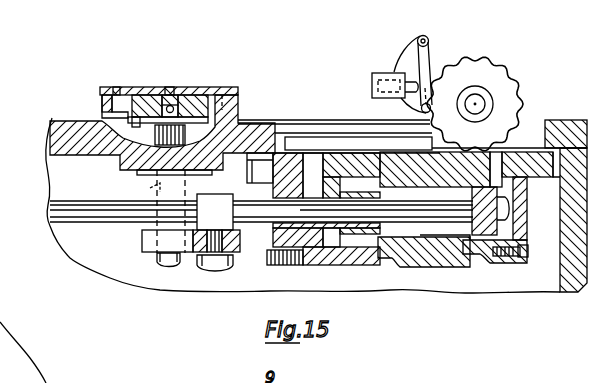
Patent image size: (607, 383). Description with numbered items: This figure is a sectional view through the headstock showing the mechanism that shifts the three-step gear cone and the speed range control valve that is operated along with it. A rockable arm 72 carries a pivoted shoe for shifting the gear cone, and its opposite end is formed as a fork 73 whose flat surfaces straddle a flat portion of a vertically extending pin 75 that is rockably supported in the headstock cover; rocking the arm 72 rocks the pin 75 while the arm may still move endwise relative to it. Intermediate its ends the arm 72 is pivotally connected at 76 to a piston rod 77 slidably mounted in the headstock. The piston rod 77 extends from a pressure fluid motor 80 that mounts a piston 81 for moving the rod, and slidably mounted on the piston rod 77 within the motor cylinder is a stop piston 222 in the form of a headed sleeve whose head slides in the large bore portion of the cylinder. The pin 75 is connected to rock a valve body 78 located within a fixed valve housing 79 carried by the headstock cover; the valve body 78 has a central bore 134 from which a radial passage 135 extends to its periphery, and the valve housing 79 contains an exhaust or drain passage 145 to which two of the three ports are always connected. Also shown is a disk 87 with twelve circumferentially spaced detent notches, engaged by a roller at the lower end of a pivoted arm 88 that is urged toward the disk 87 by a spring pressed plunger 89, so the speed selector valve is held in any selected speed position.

The rockable arm 72 is at (188, 253).
The fork 73 is at (142, 240).
The vertically extending pin 75 is at (150, 188).
The pivotal connection 76 is at (215, 212).
The piston rod 77 is at (298, 210).
The valve body 78 is at (198, 100).
The valve housing 79 is at (226, 120).
The pressure fluid motor 80 is at (409, 248).
The piston 81 is at (470, 248).
The disk 87 is at (493, 86).
The pivoted arm 88 is at (428, 61).
The spring pressed plunger 89 is at (393, 98).
The bore 134 is at (181, 100).
The radial passage 135 is at (167, 106).
The exhaust or drain passage 145 is at (112, 103).
The stop piston 222 is at (342, 238).